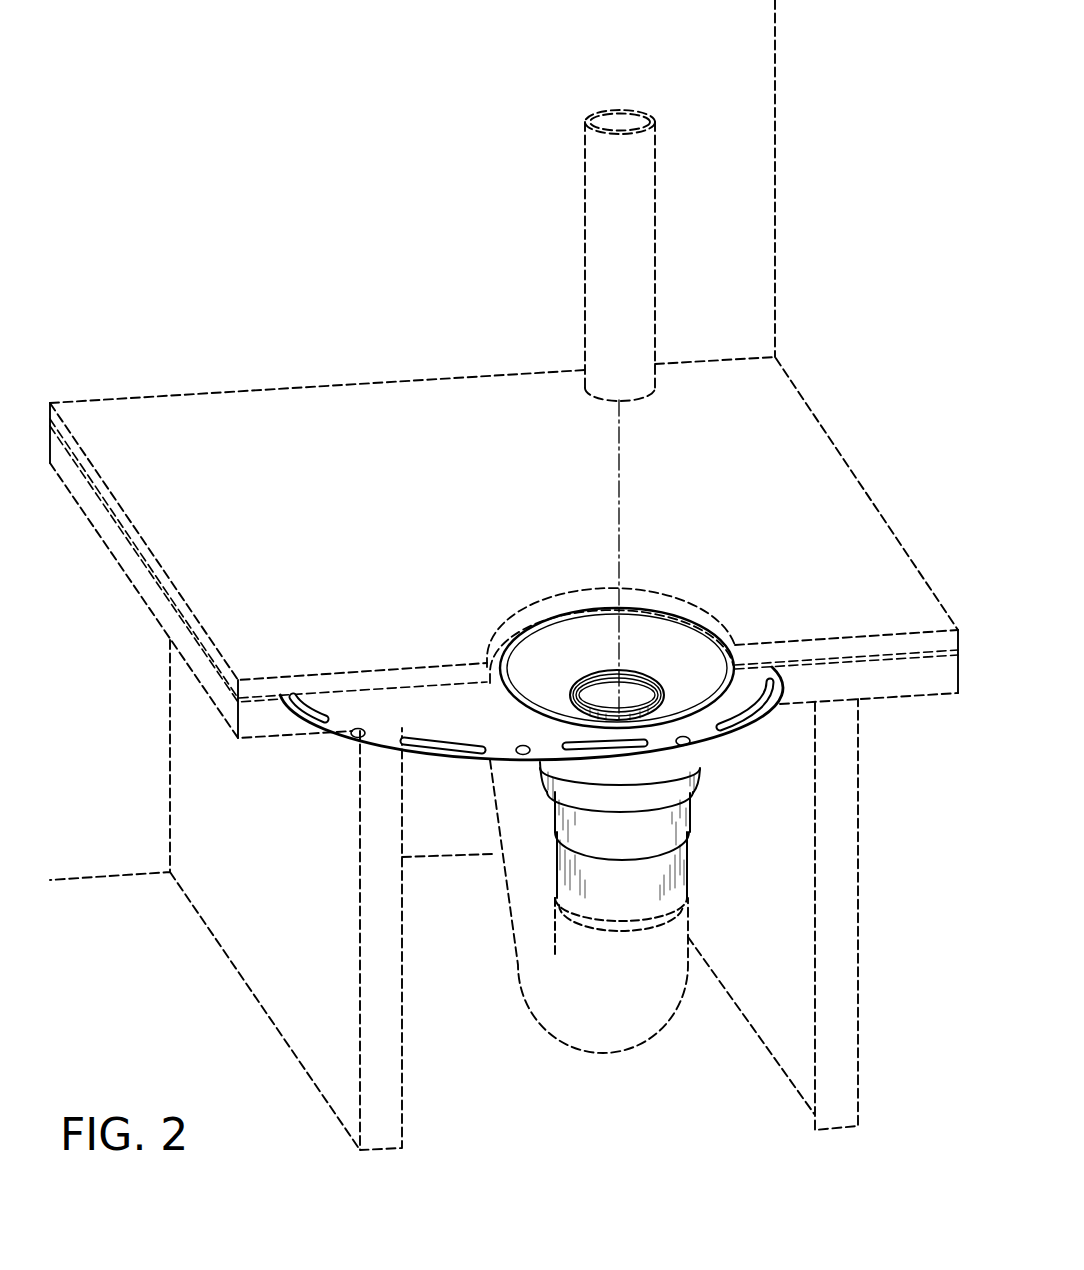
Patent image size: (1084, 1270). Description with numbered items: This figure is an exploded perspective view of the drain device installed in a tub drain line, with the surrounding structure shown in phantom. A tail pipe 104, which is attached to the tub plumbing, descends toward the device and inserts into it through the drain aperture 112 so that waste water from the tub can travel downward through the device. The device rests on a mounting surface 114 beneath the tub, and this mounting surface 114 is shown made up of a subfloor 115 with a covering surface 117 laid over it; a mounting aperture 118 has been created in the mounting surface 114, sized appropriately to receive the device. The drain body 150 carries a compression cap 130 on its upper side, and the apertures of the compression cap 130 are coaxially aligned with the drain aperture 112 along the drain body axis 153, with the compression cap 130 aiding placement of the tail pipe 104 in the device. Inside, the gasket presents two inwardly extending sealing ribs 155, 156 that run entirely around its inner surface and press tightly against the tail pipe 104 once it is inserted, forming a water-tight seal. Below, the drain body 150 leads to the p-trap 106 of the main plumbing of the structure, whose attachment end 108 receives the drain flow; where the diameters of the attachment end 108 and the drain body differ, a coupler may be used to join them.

The tail pipe 104 is at (588, 218).
The p-trap 106 is at (633, 1025).
The attachment end 108 is at (587, 923).
The drain aperture 112 is at (649, 660).
The mounting surface 114 is at (832, 547).
The subfloor 115 is at (263, 729).
The covering surface 117 is at (262, 652).
The mounting aperture 118 is at (548, 608).
The compression cap 130 is at (673, 662).
The drain body 150 is at (658, 768).
The drain body axis 153 is at (628, 491).
The sealing rib 155 is at (625, 682).
The sealing rib 156 is at (633, 688).